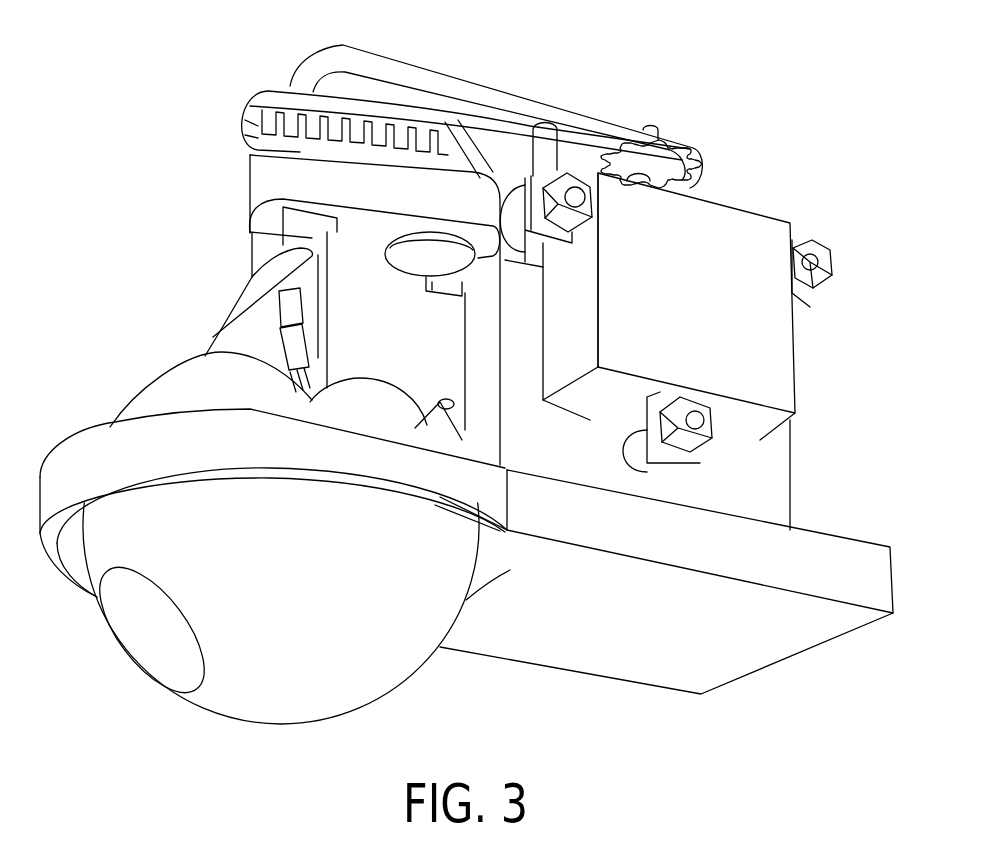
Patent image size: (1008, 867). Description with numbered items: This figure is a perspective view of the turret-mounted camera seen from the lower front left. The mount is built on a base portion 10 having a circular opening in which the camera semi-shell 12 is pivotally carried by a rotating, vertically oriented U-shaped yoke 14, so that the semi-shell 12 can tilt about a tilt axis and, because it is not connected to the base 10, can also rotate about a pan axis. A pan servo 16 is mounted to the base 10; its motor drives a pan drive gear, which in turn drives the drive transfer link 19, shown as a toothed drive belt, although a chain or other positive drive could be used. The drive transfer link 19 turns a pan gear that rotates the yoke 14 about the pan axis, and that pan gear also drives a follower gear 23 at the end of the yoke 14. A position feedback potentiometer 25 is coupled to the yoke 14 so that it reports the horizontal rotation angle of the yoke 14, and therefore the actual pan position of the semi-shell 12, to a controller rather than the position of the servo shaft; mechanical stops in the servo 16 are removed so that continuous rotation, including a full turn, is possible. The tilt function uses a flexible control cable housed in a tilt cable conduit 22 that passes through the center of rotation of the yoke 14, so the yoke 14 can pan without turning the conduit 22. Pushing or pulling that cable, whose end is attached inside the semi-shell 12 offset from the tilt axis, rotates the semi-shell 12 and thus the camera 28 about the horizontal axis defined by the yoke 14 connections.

The base portion 10 is at (733, 660).
The camera semi-shell 12 is at (330, 704).
The yoke 14 is at (223, 297).
The pan servo 16 is at (770, 368).
The drive transfer link 19 is at (687, 150).
The tilt cable conduit 22 is at (430, 80).
The follower gear 23 is at (252, 150).
The position feedback potentiometer 25 is at (425, 258).
The camera 28 is at (145, 632).